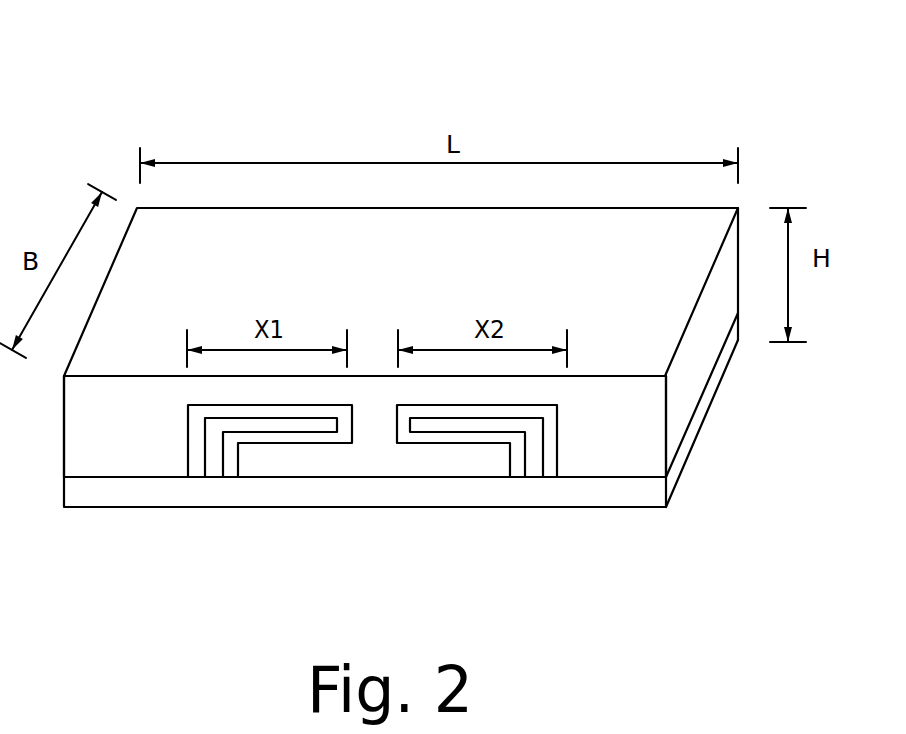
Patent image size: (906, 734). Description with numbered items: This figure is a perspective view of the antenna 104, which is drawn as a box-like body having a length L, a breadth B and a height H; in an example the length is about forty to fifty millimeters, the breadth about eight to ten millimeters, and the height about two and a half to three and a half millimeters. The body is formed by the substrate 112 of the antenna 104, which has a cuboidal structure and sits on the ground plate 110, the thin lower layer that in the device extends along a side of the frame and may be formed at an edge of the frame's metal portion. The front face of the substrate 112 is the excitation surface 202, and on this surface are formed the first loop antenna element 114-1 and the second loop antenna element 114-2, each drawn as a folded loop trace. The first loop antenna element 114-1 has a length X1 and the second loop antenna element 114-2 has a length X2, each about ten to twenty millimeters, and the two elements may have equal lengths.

The antenna 104 is at (326, 78).
The ground plate 110 is at (653, 497).
The substrate 112 is at (688, 381).
The first loop antenna element 114-1 is at (560, 420).
The second loop antenna element 114-2 is at (260, 442).
The excitation surface 202 is at (113, 417).